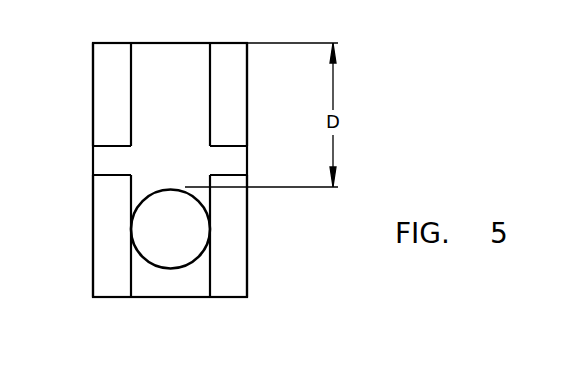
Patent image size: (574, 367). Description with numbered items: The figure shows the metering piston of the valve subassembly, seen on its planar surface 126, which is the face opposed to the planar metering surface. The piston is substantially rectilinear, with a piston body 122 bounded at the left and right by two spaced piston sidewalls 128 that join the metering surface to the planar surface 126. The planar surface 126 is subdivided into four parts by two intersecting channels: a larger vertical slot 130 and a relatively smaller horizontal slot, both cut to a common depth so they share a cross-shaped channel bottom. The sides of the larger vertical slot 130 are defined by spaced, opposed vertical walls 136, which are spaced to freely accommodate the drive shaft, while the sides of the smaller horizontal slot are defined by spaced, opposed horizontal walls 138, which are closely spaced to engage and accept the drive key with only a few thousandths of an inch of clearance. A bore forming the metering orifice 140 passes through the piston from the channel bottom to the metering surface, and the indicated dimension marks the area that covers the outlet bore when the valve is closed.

The piston body 122 is at (201, 43).
The planar surface 126 is at (97, 61).
The piston sidewalls 128 is at (90, 97).
The vertical slot 130 is at (145, 60).
The vertical walls 136 is at (130, 285).
The horizontal walls 138 is at (107, 175).
The metering orifice 140 is at (202, 250).